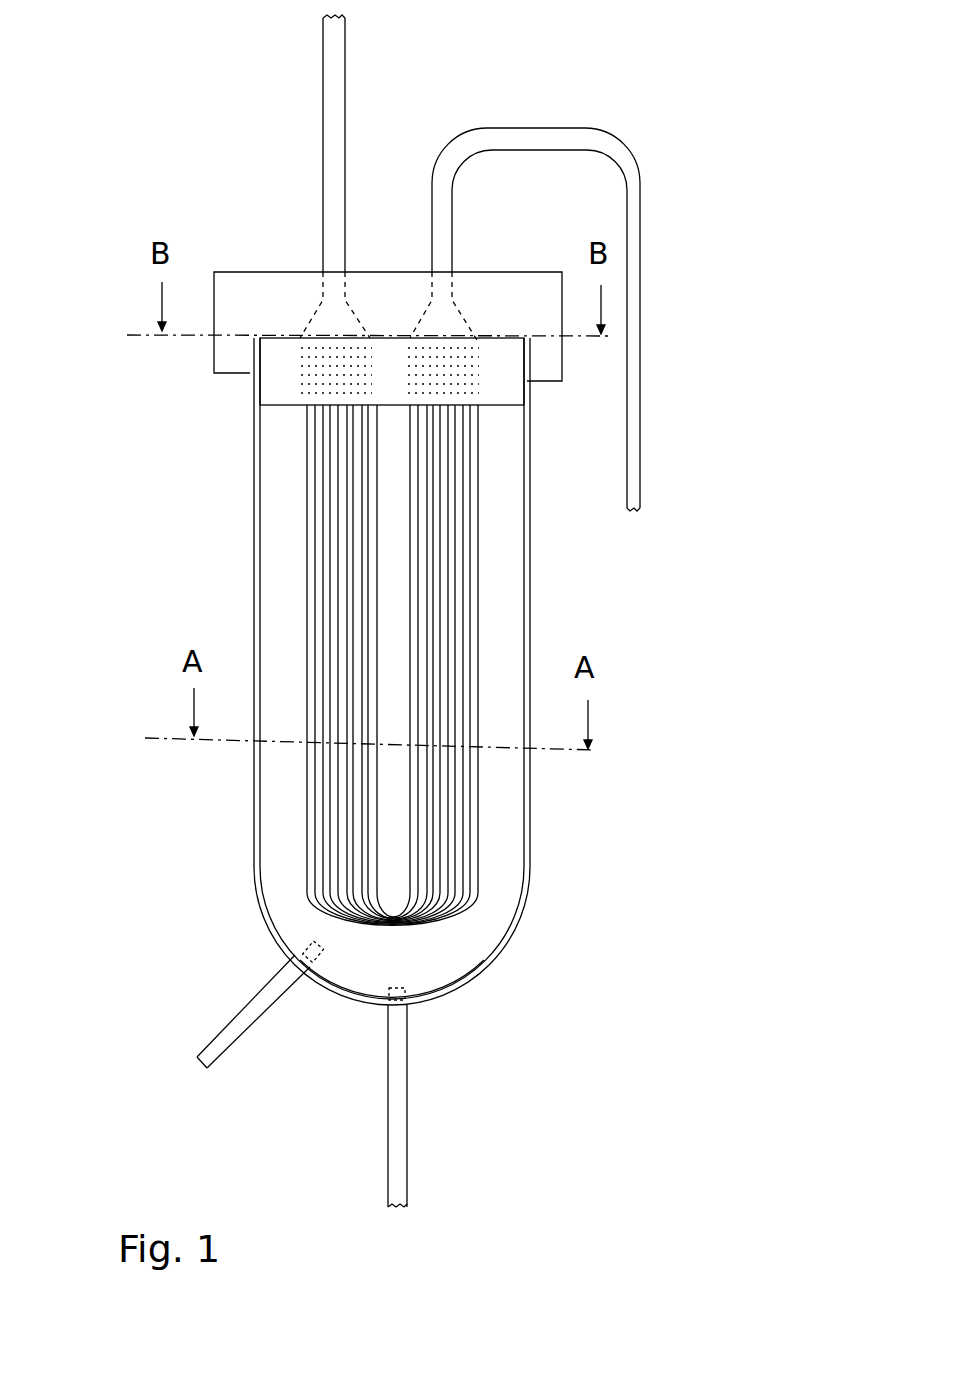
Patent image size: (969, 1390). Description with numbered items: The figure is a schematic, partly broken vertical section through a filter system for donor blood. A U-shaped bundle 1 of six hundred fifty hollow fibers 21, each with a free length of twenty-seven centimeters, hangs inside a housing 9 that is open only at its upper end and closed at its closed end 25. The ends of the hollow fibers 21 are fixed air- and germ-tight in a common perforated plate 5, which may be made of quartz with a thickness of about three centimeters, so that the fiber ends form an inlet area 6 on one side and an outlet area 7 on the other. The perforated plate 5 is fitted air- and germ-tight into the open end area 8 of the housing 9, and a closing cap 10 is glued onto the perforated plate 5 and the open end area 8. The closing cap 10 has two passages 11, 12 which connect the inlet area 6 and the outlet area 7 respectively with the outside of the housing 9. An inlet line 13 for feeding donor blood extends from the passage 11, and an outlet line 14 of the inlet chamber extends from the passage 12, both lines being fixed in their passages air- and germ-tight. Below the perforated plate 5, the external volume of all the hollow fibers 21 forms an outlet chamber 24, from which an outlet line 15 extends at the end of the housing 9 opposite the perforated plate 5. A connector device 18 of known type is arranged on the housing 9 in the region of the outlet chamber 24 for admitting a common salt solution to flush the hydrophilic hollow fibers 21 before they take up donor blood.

The bundle of hollow fibers 1 is at (343, 845).
The perforated plate 5 is at (495, 373).
The inlet area 6 is at (338, 337).
The outlet area 7 is at (443, 340).
The open end area 8 is at (252, 390).
The housing 9 is at (255, 492).
The closing cap 10 is at (542, 347).
The passage 11 is at (340, 302).
The passage 12 is at (440, 317).
The inlet line 13 is at (335, 57).
The outlet line of inlet chamber 14 is at (632, 258).
The outlet line of outlet chamber 15 is at (398, 1168).
The connector device 18 is at (247, 1018).
The hollow fibers 21 is at (460, 873).
The outlet chamber 24 is at (433, 953).
The closed end 25 is at (357, 998).